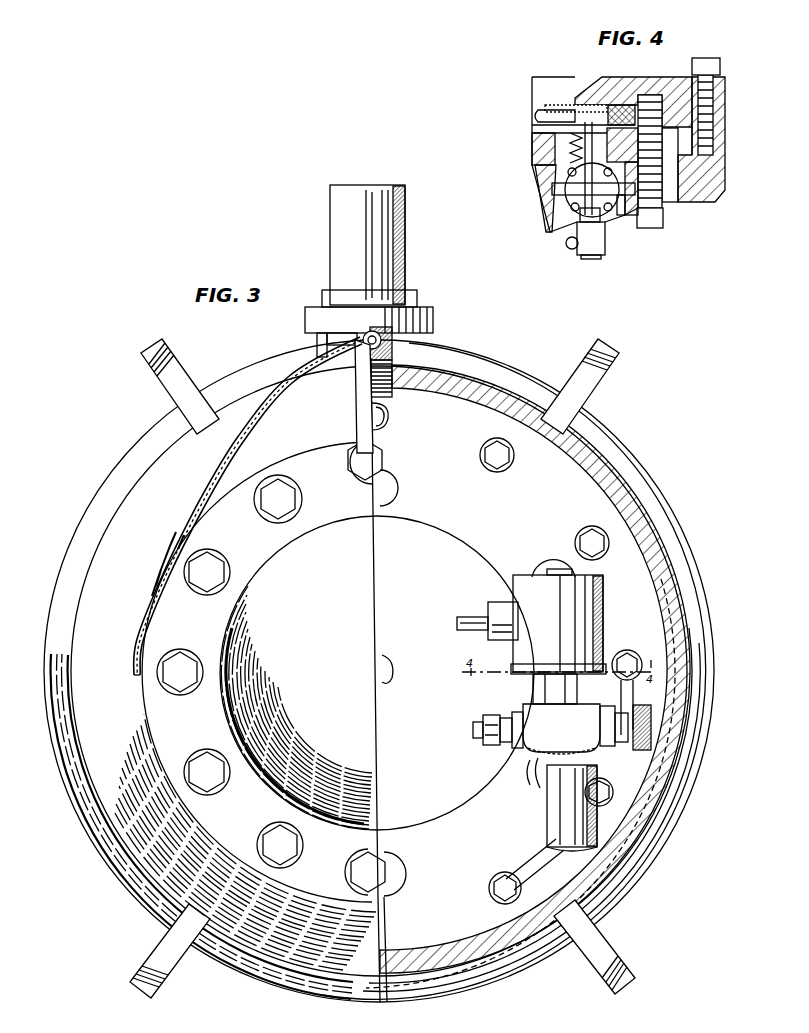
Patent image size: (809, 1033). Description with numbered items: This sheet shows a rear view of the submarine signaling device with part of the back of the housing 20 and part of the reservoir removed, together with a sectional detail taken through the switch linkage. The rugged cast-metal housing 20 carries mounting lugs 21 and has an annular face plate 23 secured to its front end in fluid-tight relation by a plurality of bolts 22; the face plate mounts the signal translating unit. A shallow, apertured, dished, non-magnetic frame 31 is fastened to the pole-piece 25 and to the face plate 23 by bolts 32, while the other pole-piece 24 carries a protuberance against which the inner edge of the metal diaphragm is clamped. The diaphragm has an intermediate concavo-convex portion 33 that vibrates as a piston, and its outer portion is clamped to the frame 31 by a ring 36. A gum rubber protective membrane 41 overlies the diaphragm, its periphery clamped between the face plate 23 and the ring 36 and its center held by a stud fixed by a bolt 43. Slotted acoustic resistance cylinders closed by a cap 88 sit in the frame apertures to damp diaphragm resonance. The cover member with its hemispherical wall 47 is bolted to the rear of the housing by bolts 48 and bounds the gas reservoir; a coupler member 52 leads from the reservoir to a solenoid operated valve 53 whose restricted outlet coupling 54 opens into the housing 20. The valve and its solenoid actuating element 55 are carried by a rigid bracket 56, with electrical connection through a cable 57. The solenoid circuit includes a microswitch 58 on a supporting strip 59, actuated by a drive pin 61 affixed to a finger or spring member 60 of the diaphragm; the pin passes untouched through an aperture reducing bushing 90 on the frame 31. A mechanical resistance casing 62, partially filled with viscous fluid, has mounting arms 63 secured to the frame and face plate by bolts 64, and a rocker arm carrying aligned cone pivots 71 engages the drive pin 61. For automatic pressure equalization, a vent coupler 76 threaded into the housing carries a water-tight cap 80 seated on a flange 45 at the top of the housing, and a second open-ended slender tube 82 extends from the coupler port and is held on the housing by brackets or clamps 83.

In FIG. 3, the housing 20 is at (690, 630).
In FIG. 4, the housing 20 is at (712, 200).
In FIG. 3, the mounting lugs 21 is at (150, 380).
In FIG. 4, the bolts 22 is at (714, 66).
In FIG. 4, the annular face plate 23 is at (718, 98).
In FIG. 3, the pole-piece 24 is at (432, 734).
In FIG. 4, the pole-piece 25 is at (546, 232).
In FIG. 3, the frame 31 is at (482, 508).
In FIG. 4, the frame 31 is at (535, 168).
In FIG. 3, the bolts 32 is at (373, 448).
In FIG. 4, the intermediate concavo-convex portion 33 is at (533, 117).
In FIG. 4, the ring 36 is at (622, 103).
In FIG. 4, the protective membrane 41 is at (552, 108).
In FIG. 3, the bolt 43 is at (387, 677).
In FIG. 3, the mounting flange 45 is at (430, 318).
In FIG. 3, the hemispherical wall 47 is at (344, 684).
In FIG. 3, the bolts 48 is at (275, 510).
In FIG. 3, the coupler member 52 is at (480, 740).
In FIG. 3, the solenoid operated valve 53 is at (530, 772).
In FIG. 3, the restricted outlet coupling 54 is at (605, 742).
In FIG. 3, the solenoid actuating element 55 is at (600, 620).
In FIG. 3, the rigid bracket 56 is at (650, 748).
In FIG. 3, the cable 57 is at (486, 620).
In FIG. 4, the microswitch 58 is at (600, 240).
In FIG. 4, the supporting strip 59 is at (570, 249).
In FIG. 4, the finger or spring member 60 is at (532, 131).
In FIG. 4, the drive pin 61 is at (580, 214).
In FIG. 3, the casing 62 is at (556, 822).
In FIG. 3, the mounting arms 63 is at (633, 700).
In FIG. 4, the mounting arms 63 is at (620, 215).
In FIG. 4, the bolts 64 is at (652, 229).
In FIG. 4, the cone pivots 71 is at (552, 190).
In FIG. 3, the coupler 76 is at (386, 408).
In FIG. 3, the cap 80 is at (398, 240).
In FIG. 3, the slender tube 82 is at (210, 484).
In FIG. 3, the brackets or clamps 83 is at (160, 560).
In FIG. 3, the cap 88 is at (392, 492).
In FIG. 4, the aperture reducing bushing 90 is at (569, 147).